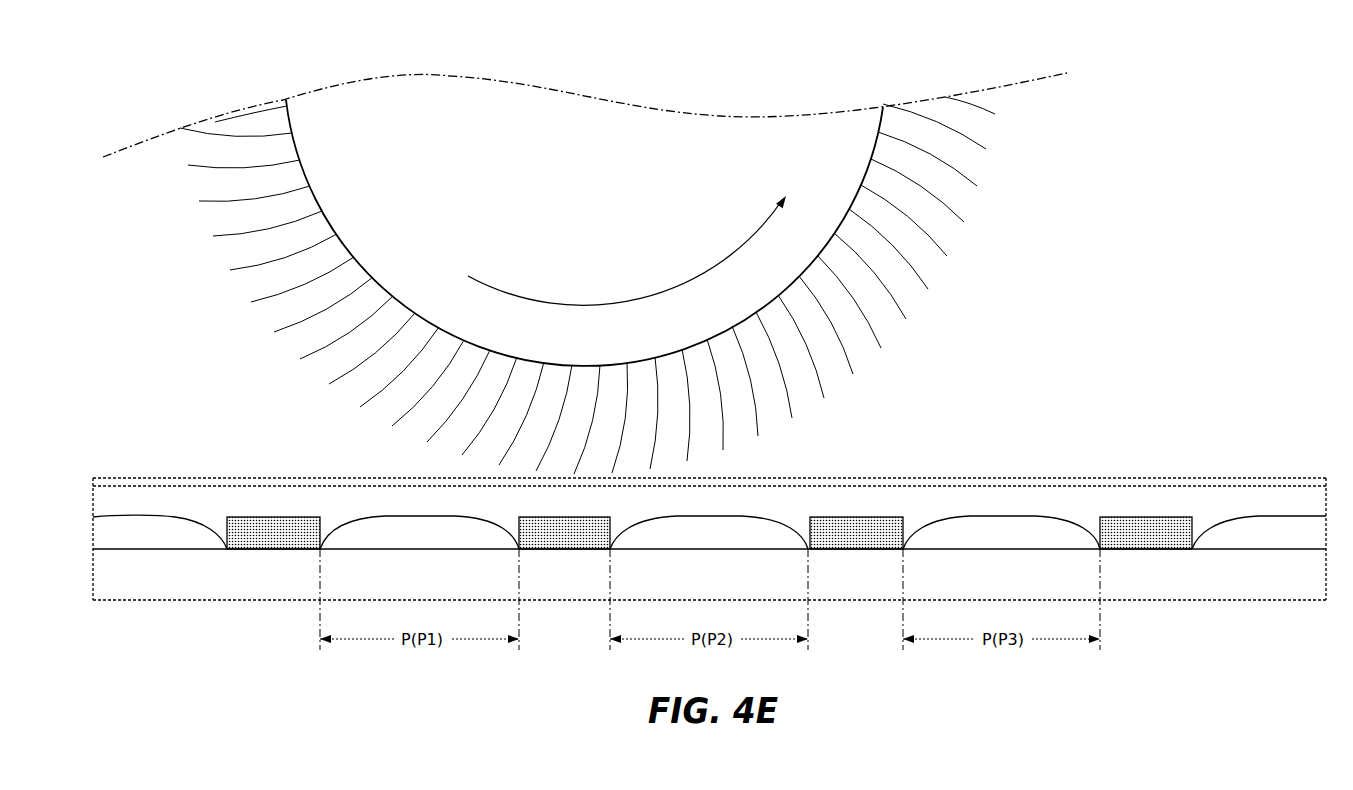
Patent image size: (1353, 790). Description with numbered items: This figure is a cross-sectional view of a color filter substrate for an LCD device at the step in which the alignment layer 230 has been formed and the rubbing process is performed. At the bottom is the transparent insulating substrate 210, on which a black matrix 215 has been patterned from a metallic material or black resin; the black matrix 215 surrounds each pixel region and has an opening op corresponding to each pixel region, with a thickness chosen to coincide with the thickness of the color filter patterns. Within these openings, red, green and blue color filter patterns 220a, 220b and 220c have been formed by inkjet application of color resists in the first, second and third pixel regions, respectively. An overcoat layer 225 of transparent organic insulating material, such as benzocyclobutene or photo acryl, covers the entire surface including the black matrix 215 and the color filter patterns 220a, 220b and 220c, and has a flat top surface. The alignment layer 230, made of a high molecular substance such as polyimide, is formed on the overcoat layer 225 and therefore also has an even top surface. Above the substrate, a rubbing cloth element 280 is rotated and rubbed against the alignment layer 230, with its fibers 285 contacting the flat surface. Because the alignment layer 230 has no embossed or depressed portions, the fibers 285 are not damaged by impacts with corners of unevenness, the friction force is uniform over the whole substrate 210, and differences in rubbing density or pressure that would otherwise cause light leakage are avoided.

The finger (fingerprint) 280 is at (702, 163).
The fibers 285 is at (980, 168).
The alignment layer 230 is at (1018, 477).
The overcoat layer 225 is at (950, 493).
The transparent insulating substrate 210 is at (1288, 592).
The black matrix 215 is at (273, 517).
The red color filter pattern 220a is at (1253, 533).
The green color filter pattern 220b is at (733, 527).
The blue color filter pattern 220c is at (167, 523).
The opening op is at (380, 521).